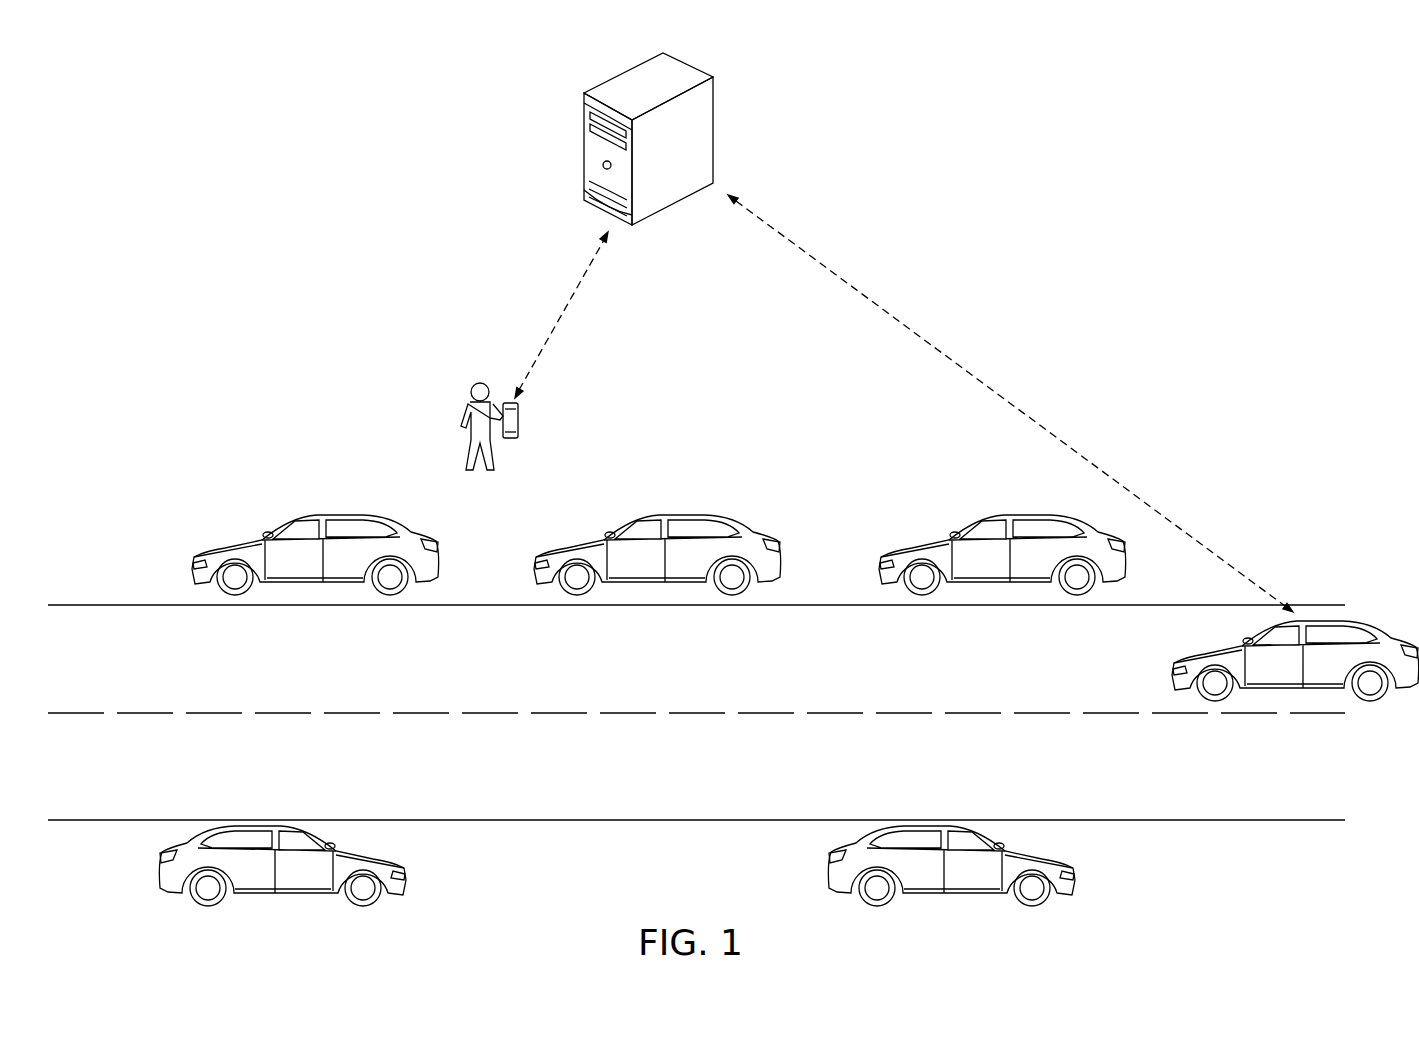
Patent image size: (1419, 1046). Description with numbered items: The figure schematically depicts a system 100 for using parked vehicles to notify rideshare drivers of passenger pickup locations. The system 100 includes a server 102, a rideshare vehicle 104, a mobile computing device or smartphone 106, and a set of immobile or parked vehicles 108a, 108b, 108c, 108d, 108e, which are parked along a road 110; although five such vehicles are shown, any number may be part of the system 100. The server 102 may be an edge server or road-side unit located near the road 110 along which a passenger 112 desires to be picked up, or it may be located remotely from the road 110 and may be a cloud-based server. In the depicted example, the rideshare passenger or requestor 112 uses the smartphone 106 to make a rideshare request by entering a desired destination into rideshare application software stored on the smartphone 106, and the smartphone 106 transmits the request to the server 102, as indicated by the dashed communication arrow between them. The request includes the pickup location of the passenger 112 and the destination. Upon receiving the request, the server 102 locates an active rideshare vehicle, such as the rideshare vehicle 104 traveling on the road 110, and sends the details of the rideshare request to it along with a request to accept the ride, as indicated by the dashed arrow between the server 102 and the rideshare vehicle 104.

The system 100 is at (184, 172).
The server 102 is at (716, 100).
The rideshare vehicle 104 is at (1346, 618).
The smartphone 106 is at (521, 410).
The immobile vehicle 108a is at (1019, 514).
The immobile vehicle 108b is at (676, 514).
The immobile vehicle 108c is at (333, 514).
The immobile vehicle 108d is at (1076, 880).
The immobile vehicle 108e is at (410, 877).
The road 110 is at (696, 752).
The passenger 112 is at (470, 393).